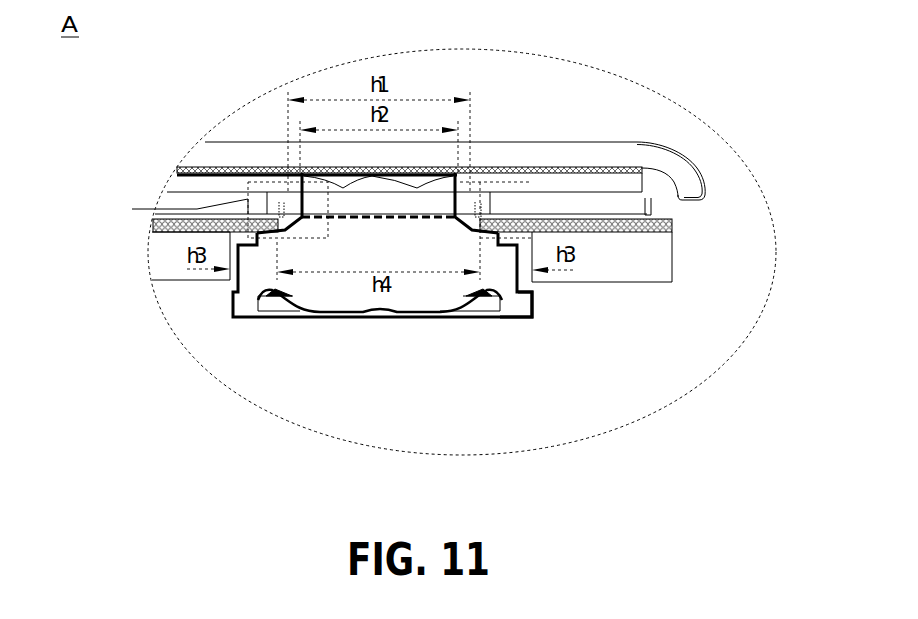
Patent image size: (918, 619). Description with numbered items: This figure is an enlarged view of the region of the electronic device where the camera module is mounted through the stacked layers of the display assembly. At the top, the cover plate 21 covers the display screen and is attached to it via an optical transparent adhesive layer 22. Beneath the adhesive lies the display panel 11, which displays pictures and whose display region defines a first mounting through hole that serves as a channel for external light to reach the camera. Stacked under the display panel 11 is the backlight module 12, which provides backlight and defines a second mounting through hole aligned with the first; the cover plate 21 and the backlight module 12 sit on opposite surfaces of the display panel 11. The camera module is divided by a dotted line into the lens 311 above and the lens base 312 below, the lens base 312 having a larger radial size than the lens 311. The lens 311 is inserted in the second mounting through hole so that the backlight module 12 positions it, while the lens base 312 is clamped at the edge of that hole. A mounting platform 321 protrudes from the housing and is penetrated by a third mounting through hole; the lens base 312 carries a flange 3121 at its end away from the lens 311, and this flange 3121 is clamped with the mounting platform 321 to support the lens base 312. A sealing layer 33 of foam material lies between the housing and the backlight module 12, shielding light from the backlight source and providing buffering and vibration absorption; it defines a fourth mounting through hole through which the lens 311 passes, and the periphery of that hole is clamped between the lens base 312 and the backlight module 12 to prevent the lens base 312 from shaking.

The cover plate 21 is at (603, 155).
The optical transparent adhesive layer 22 is at (545, 172).
The display panel 11 is at (612, 183).
The backlight module 12 is at (612, 208).
The sealing layer 33 is at (152, 225).
The mounting platform 321 is at (170, 260).
The lens 311 is at (442, 193).
The lens base 312 is at (450, 245).
The flange 3121 is at (523, 293).